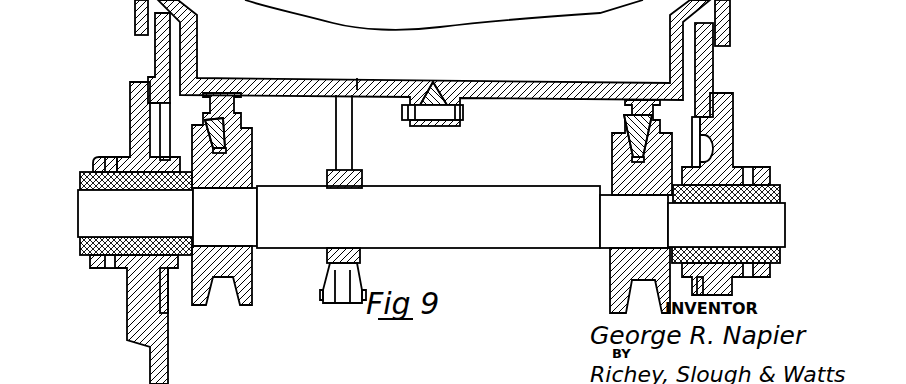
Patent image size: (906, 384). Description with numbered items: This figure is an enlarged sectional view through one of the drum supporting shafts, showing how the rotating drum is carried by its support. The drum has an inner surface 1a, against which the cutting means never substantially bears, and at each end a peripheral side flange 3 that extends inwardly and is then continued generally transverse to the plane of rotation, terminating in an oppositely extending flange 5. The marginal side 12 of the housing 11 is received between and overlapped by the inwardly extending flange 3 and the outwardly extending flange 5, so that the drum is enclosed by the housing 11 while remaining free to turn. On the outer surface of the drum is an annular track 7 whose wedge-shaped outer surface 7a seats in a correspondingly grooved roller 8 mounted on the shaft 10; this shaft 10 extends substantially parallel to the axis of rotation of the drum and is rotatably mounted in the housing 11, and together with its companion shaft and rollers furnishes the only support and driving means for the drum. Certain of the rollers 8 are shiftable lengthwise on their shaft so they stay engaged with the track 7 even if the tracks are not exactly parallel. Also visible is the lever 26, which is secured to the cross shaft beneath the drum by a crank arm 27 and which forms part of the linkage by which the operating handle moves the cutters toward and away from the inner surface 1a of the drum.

The inner surface 1a is at (357, 78).
The peripheral side flange 3 is at (198, 35).
The oppositely extending flange 5 is at (134, 20).
The annular track 7 is at (241, 120).
The wedge-shaped outer surface 7a is at (252, 128).
The grooved roller 8 is at (252, 276).
The shaft 10 is at (490, 198).
The housing 11 is at (170, 365).
The marginal side 12 is at (155, 52).
The lever 26 is at (353, 145).
The crank arm 27 is at (335, 303).